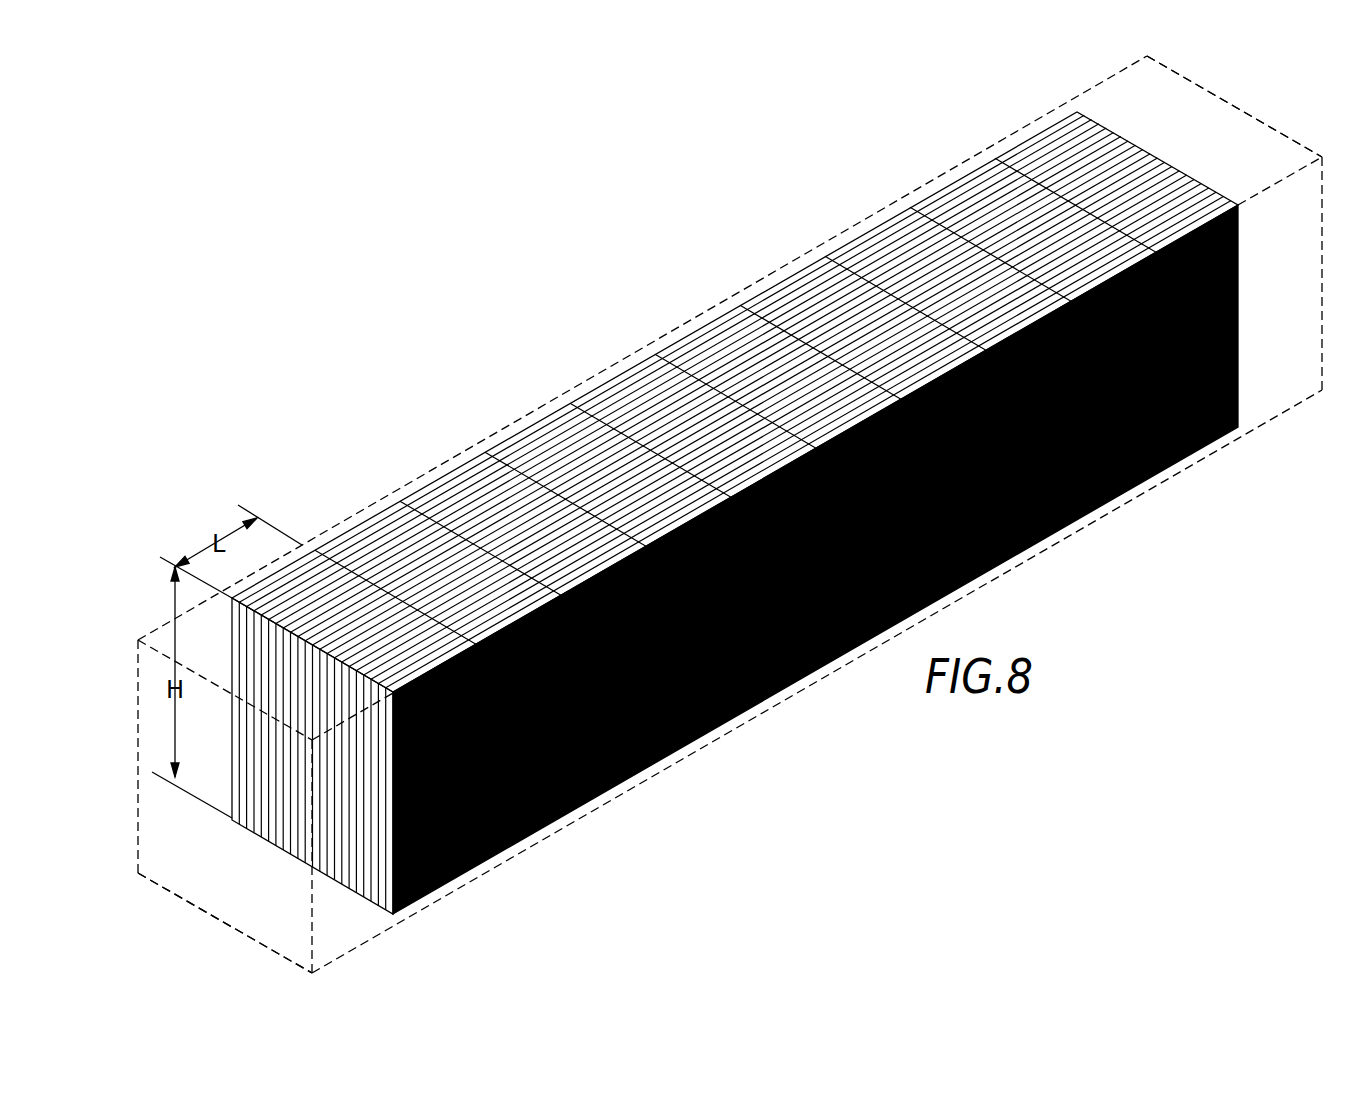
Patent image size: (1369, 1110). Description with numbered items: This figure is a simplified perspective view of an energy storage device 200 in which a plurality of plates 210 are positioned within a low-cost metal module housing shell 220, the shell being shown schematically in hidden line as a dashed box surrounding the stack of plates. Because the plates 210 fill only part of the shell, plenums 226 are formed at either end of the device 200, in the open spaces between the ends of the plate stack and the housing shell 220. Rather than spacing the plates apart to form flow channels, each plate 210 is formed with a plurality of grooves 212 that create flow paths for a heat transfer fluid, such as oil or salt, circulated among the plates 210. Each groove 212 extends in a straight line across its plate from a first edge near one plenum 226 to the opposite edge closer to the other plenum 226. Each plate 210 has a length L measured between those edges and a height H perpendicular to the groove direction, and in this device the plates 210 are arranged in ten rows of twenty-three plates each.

The energy storage device 200 is at (735, 513).
The plates 210 is at (610, 388).
The grooves 212 is at (635, 775).
The metal module housing shell 220 is at (1096, 86).
The plenums 226 is at (1240, 130).